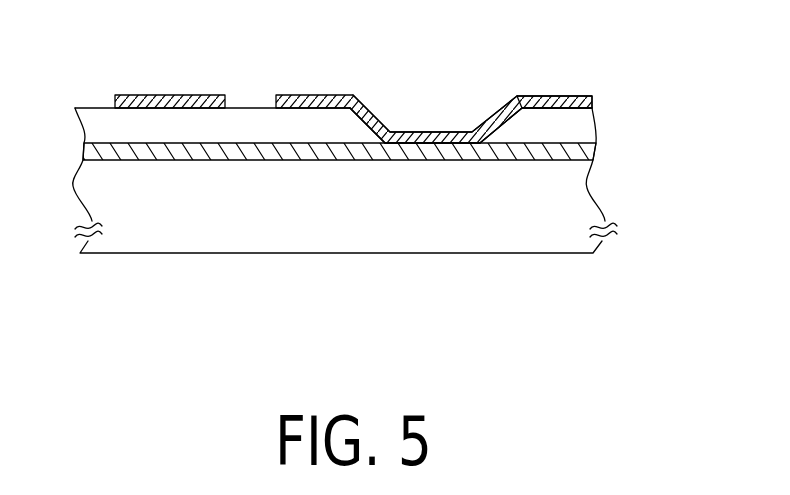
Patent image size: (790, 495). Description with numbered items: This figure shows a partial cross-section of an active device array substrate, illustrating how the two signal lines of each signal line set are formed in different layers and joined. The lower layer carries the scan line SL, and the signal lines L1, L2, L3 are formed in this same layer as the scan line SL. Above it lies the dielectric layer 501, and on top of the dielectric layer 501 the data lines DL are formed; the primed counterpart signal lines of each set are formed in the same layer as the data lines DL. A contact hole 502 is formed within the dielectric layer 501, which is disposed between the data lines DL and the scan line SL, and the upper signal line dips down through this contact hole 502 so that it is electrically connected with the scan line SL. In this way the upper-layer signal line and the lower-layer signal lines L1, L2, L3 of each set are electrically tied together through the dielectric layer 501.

The data line DL is at (184, 95).
The scan line SL is at (598, 152).
The dielectric layer 501 is at (587, 125).
The contact hole 502 is at (507, 104).
The signal line L1 is at (575, 65).
The signal line L2 is at (554, 102).
The signal line L3 is at (553, 95).